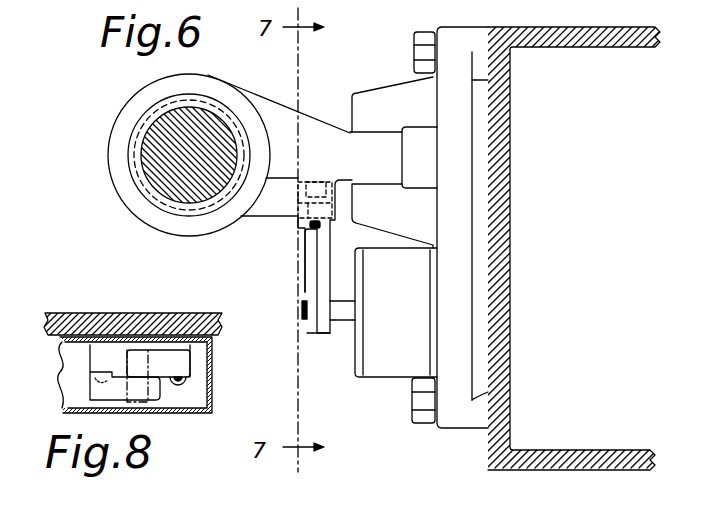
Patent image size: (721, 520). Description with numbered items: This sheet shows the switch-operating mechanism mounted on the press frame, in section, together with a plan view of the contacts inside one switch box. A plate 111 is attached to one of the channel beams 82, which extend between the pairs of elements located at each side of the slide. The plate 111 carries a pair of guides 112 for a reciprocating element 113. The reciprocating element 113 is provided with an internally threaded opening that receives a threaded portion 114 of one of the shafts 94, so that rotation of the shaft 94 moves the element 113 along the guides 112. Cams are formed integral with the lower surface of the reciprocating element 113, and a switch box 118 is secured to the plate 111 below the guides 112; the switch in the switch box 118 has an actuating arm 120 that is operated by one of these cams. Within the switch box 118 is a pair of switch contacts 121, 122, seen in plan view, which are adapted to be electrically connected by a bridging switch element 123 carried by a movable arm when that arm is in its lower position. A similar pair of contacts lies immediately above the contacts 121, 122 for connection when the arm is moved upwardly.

In FIG. 6, the shaft 94 is at (150, 133).
In FIG. 6, the threaded portion 114 is at (160, 205).
In FIG. 6, the reciprocating element 113 is at (310, 125).
In FIG. 6, the guides 112 is at (375, 92).
In FIG. 6, the actuating arm 120 is at (318, 258).
In FIG. 6, the switch box 118 is at (383, 312).
In FIG. 8, the switch box 118 is at (212, 376).
In FIG. 6, the channel beam 82 is at (575, 248).
In FIG. 6, the plate 111 is at (455, 229).
In FIG. 8, the plate 111 is at (104, 325).
In FIG. 8, the switch contact 122 is at (168, 357).
In FIG. 8, the switch contact 121 is at (97, 394).
In FIG. 8, the bridging switch element 123 is at (160, 392).